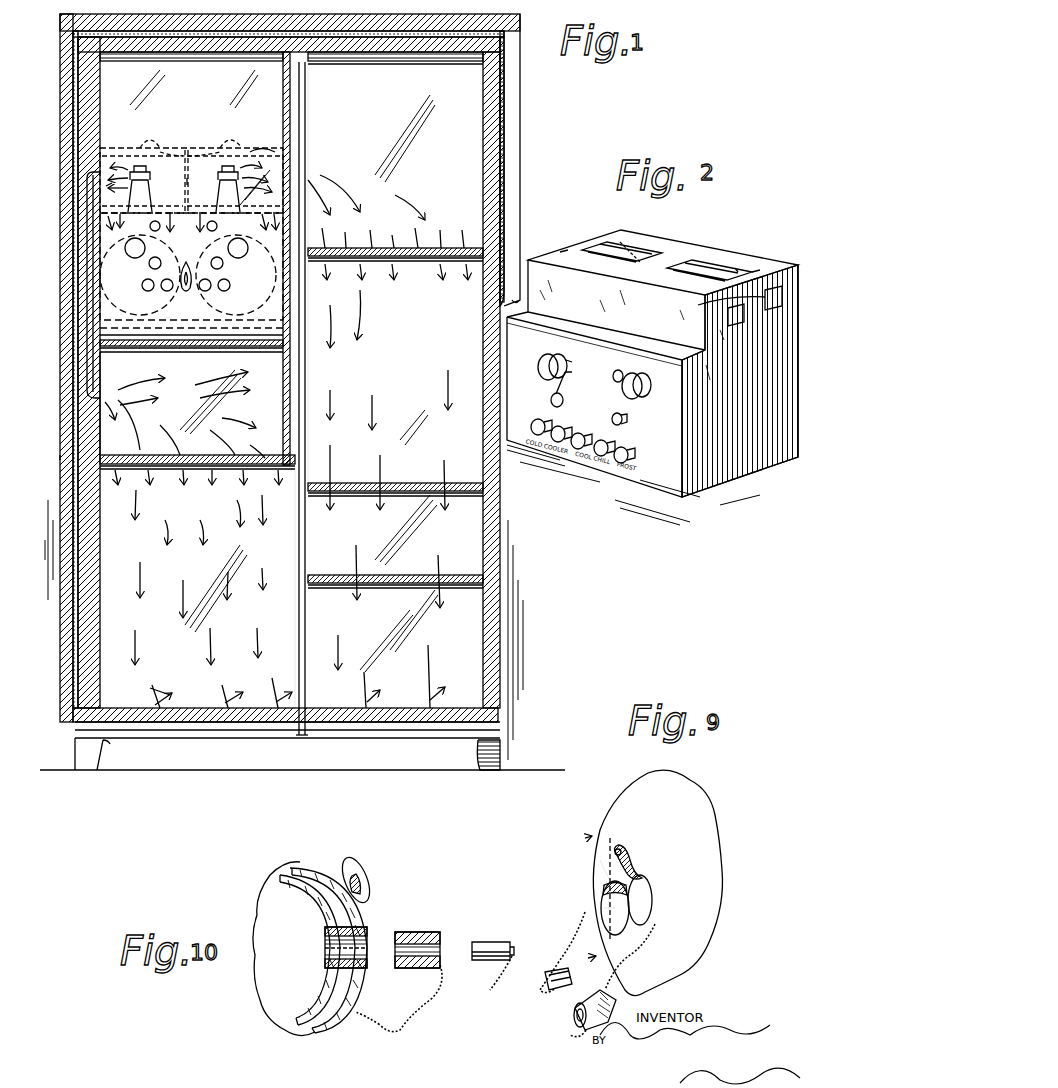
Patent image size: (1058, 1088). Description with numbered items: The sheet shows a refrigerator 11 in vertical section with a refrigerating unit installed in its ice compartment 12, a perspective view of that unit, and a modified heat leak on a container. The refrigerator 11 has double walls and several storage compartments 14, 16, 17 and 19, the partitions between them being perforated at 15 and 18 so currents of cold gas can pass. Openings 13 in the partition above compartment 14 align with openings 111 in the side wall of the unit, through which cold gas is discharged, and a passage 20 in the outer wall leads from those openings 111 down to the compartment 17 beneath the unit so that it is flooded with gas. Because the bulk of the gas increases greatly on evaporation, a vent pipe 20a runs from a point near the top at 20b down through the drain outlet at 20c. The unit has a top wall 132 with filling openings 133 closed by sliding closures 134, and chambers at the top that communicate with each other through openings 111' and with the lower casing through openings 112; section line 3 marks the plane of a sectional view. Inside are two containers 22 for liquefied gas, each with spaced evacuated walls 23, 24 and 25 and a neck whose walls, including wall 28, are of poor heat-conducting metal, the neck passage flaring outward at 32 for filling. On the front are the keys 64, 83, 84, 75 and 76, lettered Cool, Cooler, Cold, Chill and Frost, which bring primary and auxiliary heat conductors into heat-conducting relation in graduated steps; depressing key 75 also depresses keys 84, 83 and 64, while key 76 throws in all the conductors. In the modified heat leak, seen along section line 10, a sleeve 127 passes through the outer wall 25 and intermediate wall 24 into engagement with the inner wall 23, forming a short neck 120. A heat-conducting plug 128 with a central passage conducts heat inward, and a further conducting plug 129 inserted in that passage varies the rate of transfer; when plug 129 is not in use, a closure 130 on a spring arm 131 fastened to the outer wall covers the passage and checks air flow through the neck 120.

In FIG. 1, the section line 3 is at (568, 239).
In FIG. 2, the section line 3 is at (730, 282).
In FIG. 1, the section line 10 is at (282, 157).
In FIG. 9, the section line 10 is at (613, 892).
In FIG. 1, the refrigerator 11 is at (497, 226).
In FIG. 1, the ice compartment 12 is at (308, 103).
In FIG. 1, the openings 13 is at (286, 182).
In FIG. 1, the storage compartment 14 is at (502, 208).
In FIG. 1, the perforations 15 is at (514, 203).
In FIG. 1, the storage compartment 16 is at (378, 372).
In FIG. 1, the storage compartment 17 is at (105, 442).
In FIG. 1, the perforations 18 is at (131, 587).
In FIG. 1, the storage compartment 19 is at (256, 588).
In FIG. 1, the passage 20 is at (100, 375).
In FIG. 1, the vent pipe 20a is at (306, 382).
In FIG. 1, the vent pipe upper end 20b is at (308, 66).
In FIG. 1, the vent pipe bottom outlet 20c is at (302, 738).
In FIG. 1, the container 22 is at (205, 292).
In FIG. 2, the container 22 is at (542, 366).
In FIG. 9, the container 22 is at (600, 855).
In FIG. 10, the container 22 is at (342, 1026).
In FIG. 10, the inner wall 23 is at (303, 1000).
In FIG. 10, the intermediate wall 24 is at (318, 1031).
In FIG. 9, the outer wall 25 is at (601, 896).
In FIG. 10, the outer wall 25 is at (367, 929).
In FIG. 1, the neck wall 28 is at (184, 189).
In FIG. 1, the flared neck portion 32 is at (191, 180).
In FIG. 1, the key 64 is at (187, 260).
In FIG. 2, the key 64 is at (583, 436).
In FIG. 1, the key 75 is at (218, 291).
In FIG. 2, the key 75 is at (612, 446).
In FIG. 1, the key 76 is at (230, 285).
In FIG. 2, the key 76 is at (656, 434).
In FIG. 1, the key 83 is at (166, 292).
In FIG. 2, the key 83 is at (570, 434).
In FIG. 1, the key 84 is at (144, 288).
In FIG. 2, the key 84 is at (537, 420).
In FIG. 1, the openings 111 is at (222, 174).
In FIG. 2, the openings 111 is at (718, 305).
In FIG. 1, the openings 111' is at (209, 179).
In FIG. 1, the openings 112 is at (90, 226).
In FIG. 2, the openings 112 is at (775, 288).
In FIG. 9, the short neck 120 is at (604, 890).
In FIG. 10, the short neck 120 is at (365, 965).
In FIG. 9, the sleeve 127 is at (607, 908).
In FIG. 10, the sleeve 127 is at (323, 946).
In FIG. 9, the plug 128 is at (576, 1014).
In FIG. 10, the plug 128 is at (424, 932).
In FIG. 9, the plug 129 is at (556, 970).
In FIG. 10, the plug 129 is at (486, 942).
In FIG. 9, the closure 130 is at (650, 900).
In FIG. 10, the closure 130 is at (358, 866).
In FIG. 9, the spring arm 131 is at (633, 868).
In FIG. 10, the spring arm 131 is at (360, 886).
In FIG. 1, the top wall 132 is at (258, 150).
In FIG. 2, the top wall 132 is at (737, 265).
In FIG. 1, the openings 133 is at (152, 148).
In FIG. 2, the openings 133 is at (620, 255).
In FIG. 1, the sliding closures 134 is at (210, 150).
In FIG. 2, the sliding closures 134 is at (645, 262).